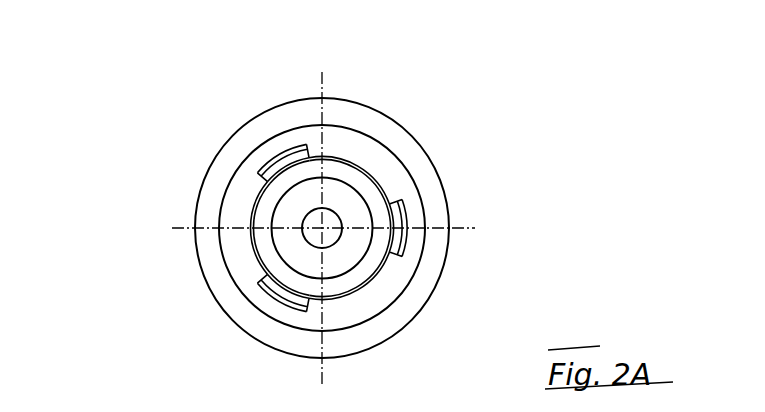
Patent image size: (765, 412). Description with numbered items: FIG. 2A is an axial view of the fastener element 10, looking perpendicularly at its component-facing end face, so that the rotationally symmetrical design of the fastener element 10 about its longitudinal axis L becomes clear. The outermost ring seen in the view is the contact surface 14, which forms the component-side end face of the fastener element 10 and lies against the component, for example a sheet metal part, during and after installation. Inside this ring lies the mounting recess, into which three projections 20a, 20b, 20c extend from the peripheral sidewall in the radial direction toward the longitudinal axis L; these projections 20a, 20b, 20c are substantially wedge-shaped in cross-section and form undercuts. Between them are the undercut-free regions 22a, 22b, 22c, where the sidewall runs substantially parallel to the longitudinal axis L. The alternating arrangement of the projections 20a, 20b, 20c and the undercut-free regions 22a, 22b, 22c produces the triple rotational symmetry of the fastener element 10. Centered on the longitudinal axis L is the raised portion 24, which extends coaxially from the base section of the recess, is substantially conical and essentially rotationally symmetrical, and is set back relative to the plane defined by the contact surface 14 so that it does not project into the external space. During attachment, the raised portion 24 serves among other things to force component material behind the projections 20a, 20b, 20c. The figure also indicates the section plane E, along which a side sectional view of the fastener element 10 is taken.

The fastener element 10 is at (446, 118).
The contact surface 14 is at (412, 246).
The projection 20a is at (248, 261).
The projection 20b is at (360, 156).
The projection 20c is at (372, 289).
The undercut-free region 22a is at (290, 147).
The undercut-free region 22b is at (408, 219).
The undercut-free region 22c is at (283, 303).
The raised portion 24 is at (298, 197).
The section plane E is at (178, 228).
The longitudinal axis L is at (323, 227).